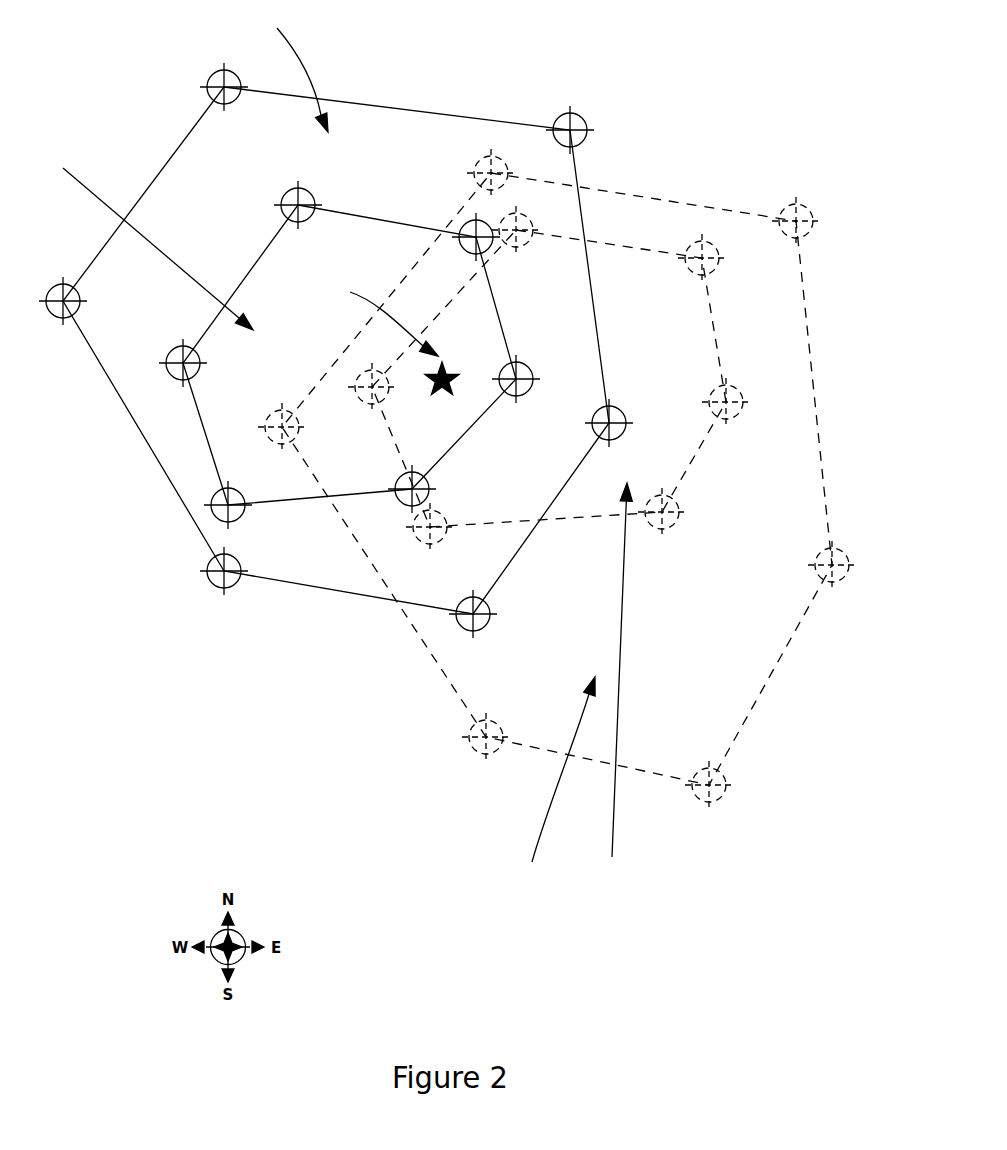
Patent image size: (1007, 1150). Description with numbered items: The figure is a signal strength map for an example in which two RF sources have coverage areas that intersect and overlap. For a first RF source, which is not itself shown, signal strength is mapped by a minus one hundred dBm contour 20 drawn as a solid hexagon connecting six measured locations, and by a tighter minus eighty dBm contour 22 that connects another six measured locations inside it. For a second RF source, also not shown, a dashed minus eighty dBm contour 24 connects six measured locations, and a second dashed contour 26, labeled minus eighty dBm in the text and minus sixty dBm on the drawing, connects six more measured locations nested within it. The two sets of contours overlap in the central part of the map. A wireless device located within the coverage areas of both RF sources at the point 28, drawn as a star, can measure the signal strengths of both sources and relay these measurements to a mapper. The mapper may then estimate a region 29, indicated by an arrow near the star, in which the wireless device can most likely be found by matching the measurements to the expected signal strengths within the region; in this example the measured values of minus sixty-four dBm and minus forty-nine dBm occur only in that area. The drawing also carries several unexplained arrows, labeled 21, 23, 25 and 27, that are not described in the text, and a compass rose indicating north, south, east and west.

The −100 dBm contour 20 is at (147, 188).
The -100 dBm signal strength contour 21 is at (350, 73).
The −80 dBm contour 22 is at (247, 277).
The direction of travel 23 is at (151, 240).
The −80 dBm contour 24 is at (433, 655).
The direction arrow 25 is at (559, 780).
The −80 dBm contour 26 is at (598, 518).
The north direction arrow 27 is at (617, 678).
The point 28 is at (445, 394).
The region 29 is at (382, 319).